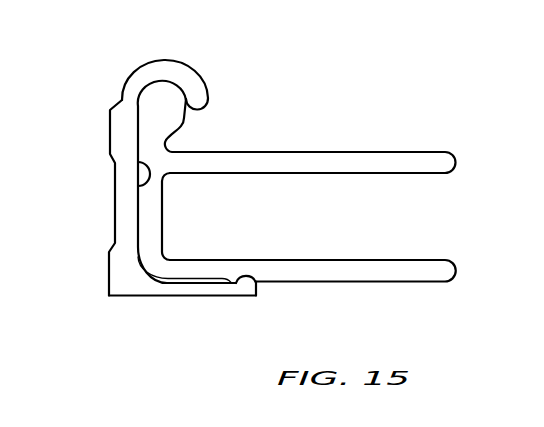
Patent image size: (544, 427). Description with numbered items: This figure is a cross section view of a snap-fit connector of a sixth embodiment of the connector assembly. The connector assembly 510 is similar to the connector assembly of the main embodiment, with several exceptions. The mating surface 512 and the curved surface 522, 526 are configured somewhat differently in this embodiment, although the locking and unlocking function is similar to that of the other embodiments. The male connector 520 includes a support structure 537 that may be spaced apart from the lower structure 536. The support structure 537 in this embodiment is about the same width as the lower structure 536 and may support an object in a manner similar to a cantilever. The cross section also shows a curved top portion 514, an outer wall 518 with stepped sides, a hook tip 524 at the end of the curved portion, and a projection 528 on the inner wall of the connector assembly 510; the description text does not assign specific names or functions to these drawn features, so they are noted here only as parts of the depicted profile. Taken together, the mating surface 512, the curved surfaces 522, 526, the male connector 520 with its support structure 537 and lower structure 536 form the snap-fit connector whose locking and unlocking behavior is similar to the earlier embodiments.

The mounting channel member 510 is at (128, 80).
The mating surface 512 is at (245, 279).
The curved top portion 514 is at (151, 62).
The outer wall 518 is at (137, 147).
The male connector 520 is at (445, 163).
The curved surface 522 is at (230, 282).
The hook tip 524 is at (171, 96).
The curved surface 526 is at (275, 282).
The projection 528 is at (146, 183).
The lower structure 536 is at (348, 259).
The support structure 537 is at (290, 173).